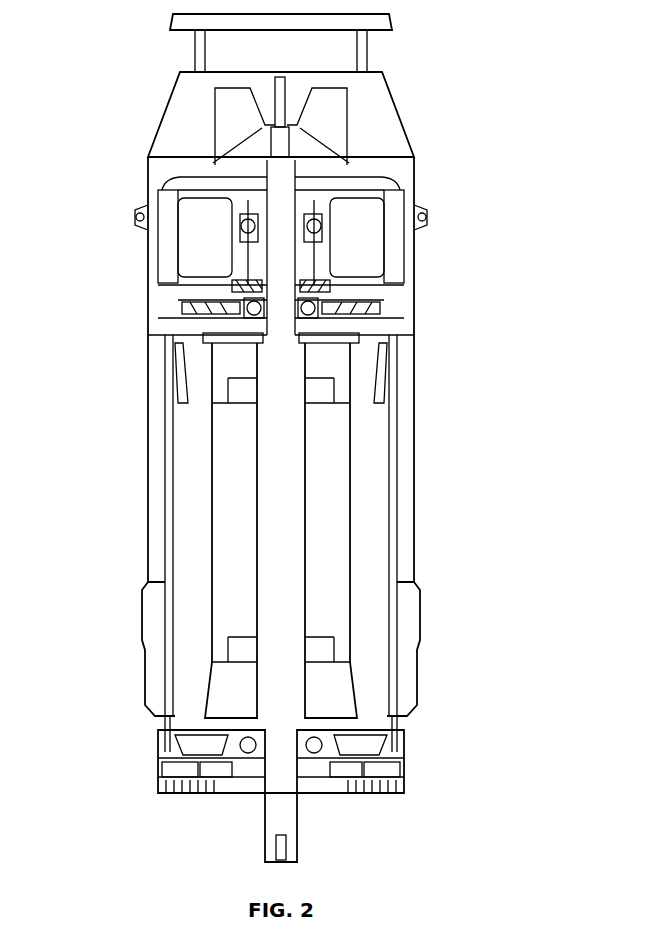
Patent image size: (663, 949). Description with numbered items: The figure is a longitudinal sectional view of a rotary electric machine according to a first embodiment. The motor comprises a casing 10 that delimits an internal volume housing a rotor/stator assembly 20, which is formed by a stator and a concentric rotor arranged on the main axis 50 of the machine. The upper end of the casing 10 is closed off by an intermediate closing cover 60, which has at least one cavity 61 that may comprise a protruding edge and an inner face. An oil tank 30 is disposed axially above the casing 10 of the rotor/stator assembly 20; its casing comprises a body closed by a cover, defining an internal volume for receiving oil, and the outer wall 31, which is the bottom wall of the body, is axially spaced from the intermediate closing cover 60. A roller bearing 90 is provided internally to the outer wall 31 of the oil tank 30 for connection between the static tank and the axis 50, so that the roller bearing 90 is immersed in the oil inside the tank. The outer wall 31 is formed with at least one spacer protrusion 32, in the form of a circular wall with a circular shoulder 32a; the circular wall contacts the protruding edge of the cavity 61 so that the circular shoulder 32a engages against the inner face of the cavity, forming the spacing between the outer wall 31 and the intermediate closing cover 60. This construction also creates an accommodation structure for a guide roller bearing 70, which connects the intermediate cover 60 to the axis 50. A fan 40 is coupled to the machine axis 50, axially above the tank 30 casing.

The casing 10 is at (152, 513).
The rotor/stator assembly 20 is at (376, 455).
The oil tank 30 is at (163, 207).
The outer wall 31 is at (236, 228).
The spacer protrusion 32 is at (243, 288).
The circular shoulder 32a is at (313, 288).
The fan 40 is at (344, 120).
The main axis 50 is at (288, 254).
The intermediate closing cover 60 is at (195, 308).
The cavity 61 is at (325, 308).
The guide roller bearing 70 is at (248, 308).
The roller bearing 90 is at (236, 225).